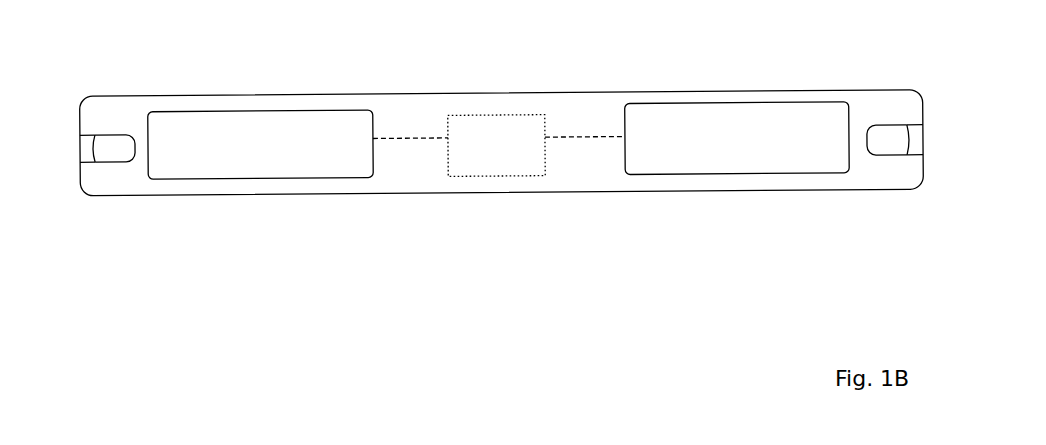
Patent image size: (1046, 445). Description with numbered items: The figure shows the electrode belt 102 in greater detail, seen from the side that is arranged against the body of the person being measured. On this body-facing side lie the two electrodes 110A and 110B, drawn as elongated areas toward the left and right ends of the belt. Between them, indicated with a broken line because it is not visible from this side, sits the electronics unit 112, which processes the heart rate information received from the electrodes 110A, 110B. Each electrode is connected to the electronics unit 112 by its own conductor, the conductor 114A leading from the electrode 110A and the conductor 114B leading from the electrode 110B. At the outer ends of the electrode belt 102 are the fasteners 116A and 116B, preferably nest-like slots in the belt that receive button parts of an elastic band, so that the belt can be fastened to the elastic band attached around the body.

The electrode belt 102 is at (553, 193).
The electrode 110A is at (295, 160).
The electrode 110B is at (773, 158).
The electronics unit 112 is at (527, 160).
The conductor 114A is at (395, 138).
The conductor 114B is at (570, 137).
The fastener 116A is at (877, 143).
The fastener 116B is at (113, 148).